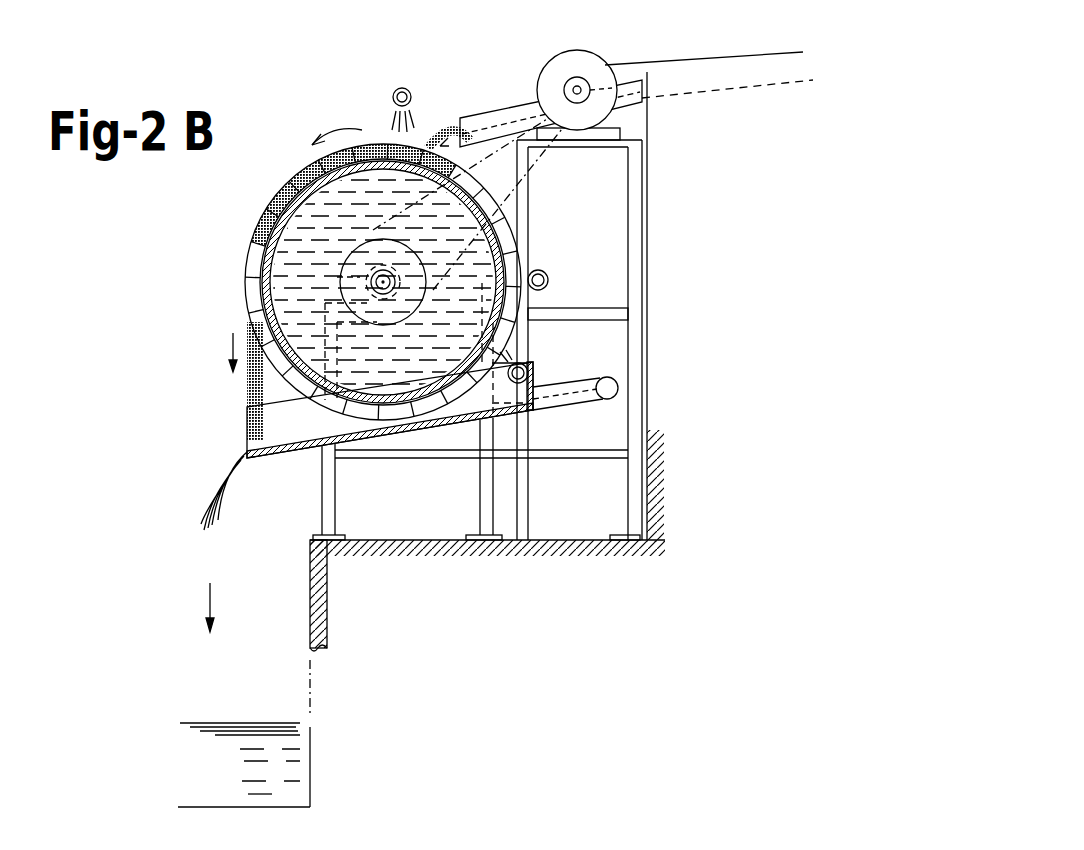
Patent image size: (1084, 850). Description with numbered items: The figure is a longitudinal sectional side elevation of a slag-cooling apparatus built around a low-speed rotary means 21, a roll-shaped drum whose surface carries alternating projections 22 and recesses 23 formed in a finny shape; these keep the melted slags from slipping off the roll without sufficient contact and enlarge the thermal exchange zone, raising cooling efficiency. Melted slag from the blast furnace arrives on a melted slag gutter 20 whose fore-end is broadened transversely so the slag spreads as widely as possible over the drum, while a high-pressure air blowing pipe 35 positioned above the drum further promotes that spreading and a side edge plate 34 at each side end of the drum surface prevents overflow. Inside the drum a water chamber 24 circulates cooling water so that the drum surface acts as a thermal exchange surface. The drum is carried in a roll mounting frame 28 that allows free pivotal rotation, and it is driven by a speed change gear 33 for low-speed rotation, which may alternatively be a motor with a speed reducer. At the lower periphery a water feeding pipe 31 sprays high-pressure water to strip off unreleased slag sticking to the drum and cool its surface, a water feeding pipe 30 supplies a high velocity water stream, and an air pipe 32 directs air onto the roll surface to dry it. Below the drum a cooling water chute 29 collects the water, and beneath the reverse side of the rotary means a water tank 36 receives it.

The melted slag gutter 20 is at (500, 117).
The low-speed rotary means 21 is at (364, 284).
The projection 22 is at (388, 143).
The recess 23 is at (415, 144).
The water chamber 24 is at (300, 213).
The roll mounting frame 28 is at (620, 315).
The cooling water chute 29 is at (302, 452).
The water feeding pipe 30 is at (573, 386).
The water feeding pipe 31 is at (523, 366).
The air pipe 32 is at (545, 270).
The speed change gear 33 is at (592, 64).
The side edge plate 34 is at (300, 168).
The high-pressure air blowing pipe 35 is at (403, 87).
The water tank 36 is at (312, 786).